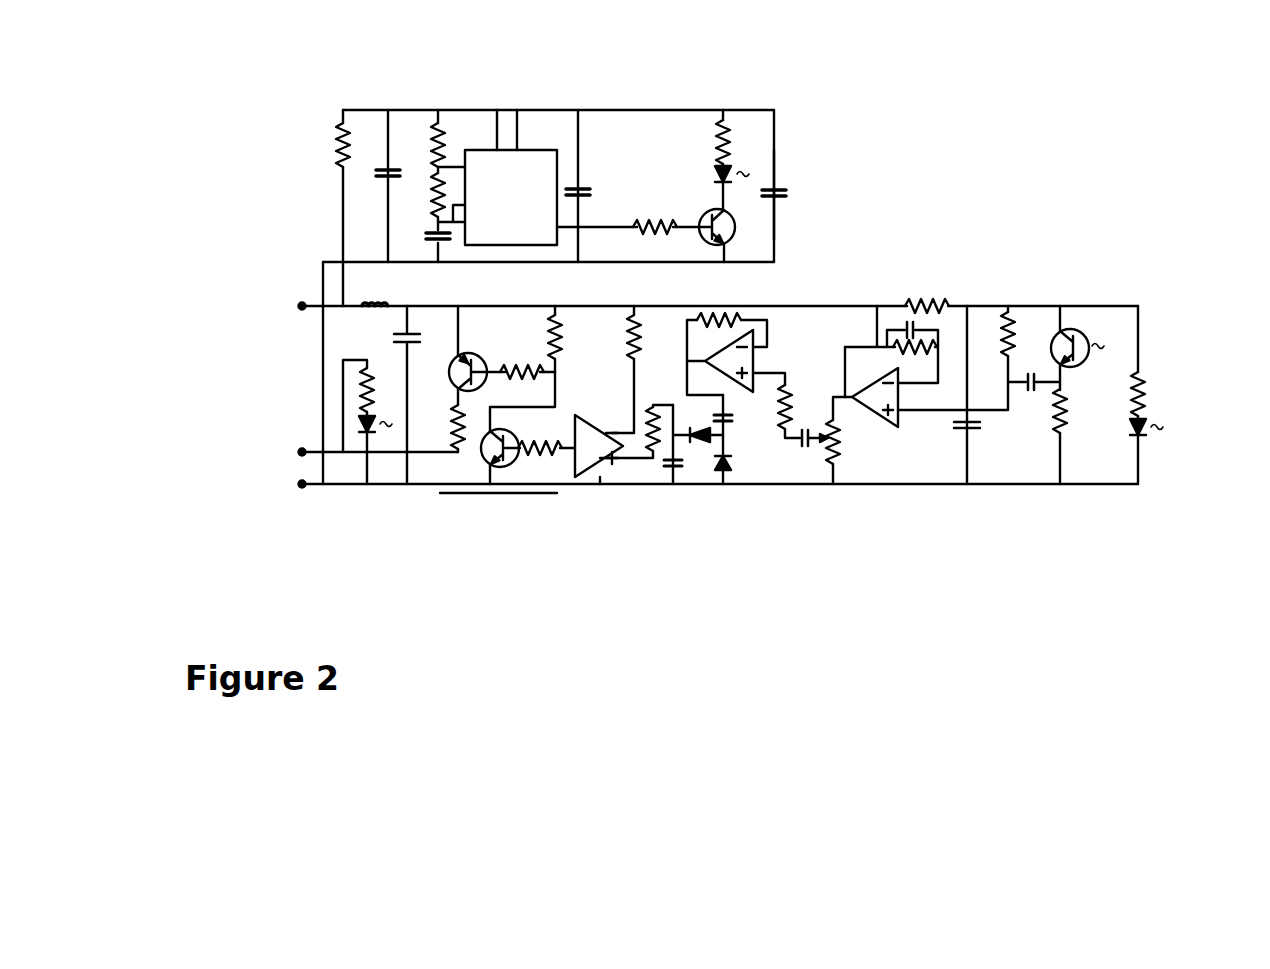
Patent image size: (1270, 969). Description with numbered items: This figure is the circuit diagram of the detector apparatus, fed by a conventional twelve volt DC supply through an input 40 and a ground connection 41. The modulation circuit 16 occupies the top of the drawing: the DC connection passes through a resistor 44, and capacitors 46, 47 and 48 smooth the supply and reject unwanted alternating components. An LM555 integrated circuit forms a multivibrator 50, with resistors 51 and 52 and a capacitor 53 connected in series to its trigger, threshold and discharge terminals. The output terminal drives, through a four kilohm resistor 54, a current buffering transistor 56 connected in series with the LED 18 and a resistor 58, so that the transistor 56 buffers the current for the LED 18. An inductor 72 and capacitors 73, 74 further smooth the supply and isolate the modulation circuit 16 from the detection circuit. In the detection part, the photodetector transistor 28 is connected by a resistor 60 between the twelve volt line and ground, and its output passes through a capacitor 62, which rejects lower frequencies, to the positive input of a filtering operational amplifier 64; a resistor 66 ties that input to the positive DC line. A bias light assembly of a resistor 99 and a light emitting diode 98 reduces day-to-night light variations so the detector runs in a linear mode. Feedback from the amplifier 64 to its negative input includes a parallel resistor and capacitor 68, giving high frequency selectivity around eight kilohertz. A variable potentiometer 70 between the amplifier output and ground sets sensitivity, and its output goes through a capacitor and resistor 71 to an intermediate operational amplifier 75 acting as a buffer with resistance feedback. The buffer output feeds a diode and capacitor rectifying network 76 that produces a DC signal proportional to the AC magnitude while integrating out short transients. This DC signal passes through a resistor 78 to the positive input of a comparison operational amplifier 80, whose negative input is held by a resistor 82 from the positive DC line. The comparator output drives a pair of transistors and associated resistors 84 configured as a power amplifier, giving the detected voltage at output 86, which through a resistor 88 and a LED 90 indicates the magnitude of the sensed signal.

The modulation circuit 16 is at (793, 98).
The LED 18 is at (742, 173).
The photodetector transistor 28 is at (1080, 322).
The input 40 is at (290, 300).
The ground connection 41 is at (285, 483).
The resistor 44 is at (338, 123).
The capacitor 46 is at (395, 167).
The capacitor 47 is at (593, 175).
The capacitor 48 is at (800, 193).
The multivibrator 50 is at (530, 167).
The resistor 51 is at (452, 123).
The resistor 52 is at (432, 200).
The capacitor 53 is at (443, 243).
The resistor 54 is at (657, 187).
The current buffering transistor 56 is at (740, 225).
The resistor 58 is at (728, 123).
The resistor 60 is at (1075, 395).
The capacitor 62 is at (1033, 397).
The filtering operational amplifier 64 is at (888, 430).
The resistor 66 is at (1020, 310).
The resistor and capacitor 68 is at (893, 322).
The variable potentiometer 70 is at (843, 462).
The capacitor and resistor 71 is at (782, 443).
The inductor 72 is at (380, 298).
The capacitor 73 is at (388, 335).
The capacitor 74 is at (972, 437).
The intermediate operational amplifier 75 is at (768, 362).
The diode and capacitor rectifying network 76 is at (688, 473).
The resistor 78 is at (660, 388).
The comparison operational amplifier 80 is at (600, 484).
The resistor 82 is at (625, 333).
The pair of transistors and associated resistors 84 is at (470, 495).
The output 86 is at (290, 450).
The resistor 88 is at (353, 385).
The LED 90 is at (362, 443).
The light emitting diode 98 is at (1143, 438).
The resistor 99 is at (1150, 400).